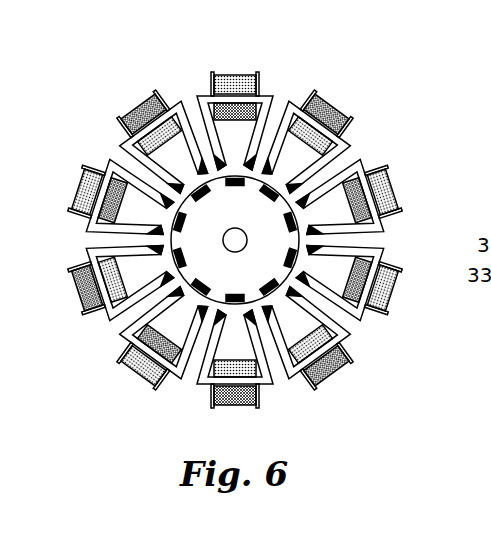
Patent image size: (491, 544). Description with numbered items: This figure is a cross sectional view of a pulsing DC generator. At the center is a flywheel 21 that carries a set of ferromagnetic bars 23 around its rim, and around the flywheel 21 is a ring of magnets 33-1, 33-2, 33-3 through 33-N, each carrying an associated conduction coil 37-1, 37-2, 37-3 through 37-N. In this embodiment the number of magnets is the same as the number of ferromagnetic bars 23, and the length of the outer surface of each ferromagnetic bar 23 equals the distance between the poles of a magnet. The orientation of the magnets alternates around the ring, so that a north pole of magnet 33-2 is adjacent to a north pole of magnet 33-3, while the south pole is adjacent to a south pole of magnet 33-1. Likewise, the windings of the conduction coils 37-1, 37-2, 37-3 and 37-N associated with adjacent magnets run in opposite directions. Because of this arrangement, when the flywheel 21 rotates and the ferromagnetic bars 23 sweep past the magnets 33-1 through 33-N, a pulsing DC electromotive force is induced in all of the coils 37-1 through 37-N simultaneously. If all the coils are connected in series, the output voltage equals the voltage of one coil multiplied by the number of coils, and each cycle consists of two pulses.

The flywheel 21 is at (283, 242).
The ferromagnetic bars 23 is at (180, 256).
The magnet 33-1 is at (270, 96).
The conduction coil 37-1 is at (237, 75).
The magnet 33-2 is at (348, 141).
The conduction coil 37-2 is at (335, 110).
The magnet 33-3 is at (386, 229).
The conduction coil 37-3 is at (384, 178).
The magnet 33-N is at (119, 145).
The conduction coil 37-N is at (141, 108).